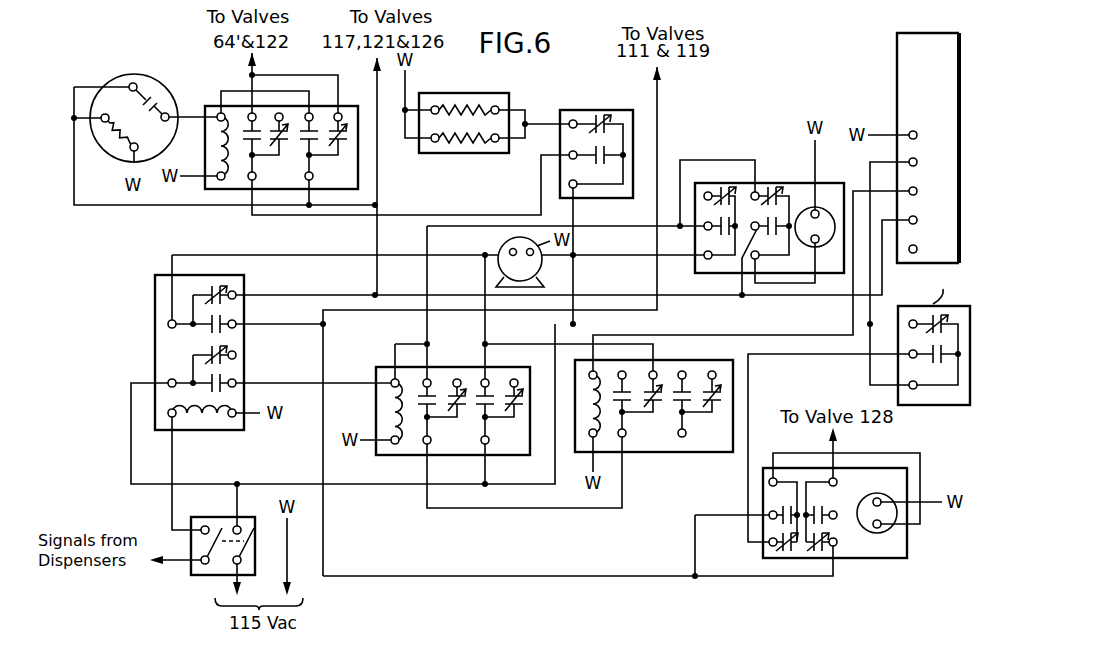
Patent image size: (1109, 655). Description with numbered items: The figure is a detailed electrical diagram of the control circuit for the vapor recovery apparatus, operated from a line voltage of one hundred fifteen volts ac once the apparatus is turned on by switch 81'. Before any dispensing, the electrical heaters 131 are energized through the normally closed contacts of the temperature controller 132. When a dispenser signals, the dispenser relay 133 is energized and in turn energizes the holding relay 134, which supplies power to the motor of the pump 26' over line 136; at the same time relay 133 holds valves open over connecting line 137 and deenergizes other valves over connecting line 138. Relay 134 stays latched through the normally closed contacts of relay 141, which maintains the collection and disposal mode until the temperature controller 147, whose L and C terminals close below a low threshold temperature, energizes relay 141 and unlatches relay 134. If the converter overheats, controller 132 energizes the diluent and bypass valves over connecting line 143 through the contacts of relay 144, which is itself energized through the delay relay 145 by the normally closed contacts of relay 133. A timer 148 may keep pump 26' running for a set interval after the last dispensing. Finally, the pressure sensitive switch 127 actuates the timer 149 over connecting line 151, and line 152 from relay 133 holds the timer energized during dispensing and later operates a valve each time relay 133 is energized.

The delay relay 145 is at (120, 82).
The relay 144 is at (208, 107).
The connecting line 143 is at (330, 217).
The connecting line 138 is at (380, 187).
The electrical heater 131 is at (490, 149).
The temperature controller 132 is at (570, 110).
The connecting line 137 is at (660, 110).
The timer 148 is at (778, 181).
The temperature controller 147 is at (897, 107).
The pump 26' is at (501, 253).
The line 136 is at (490, 256).
The dispenser relay 133 is at (155, 325).
The holding relay 134 is at (378, 368).
The relay 141 is at (663, 450).
The connecting line 151 is at (750, 390).
The pressure sensitive switch 127 is at (937, 403).
The timer 149 is at (878, 548).
The line 152 is at (530, 577).
The switch 81' is at (212, 533).